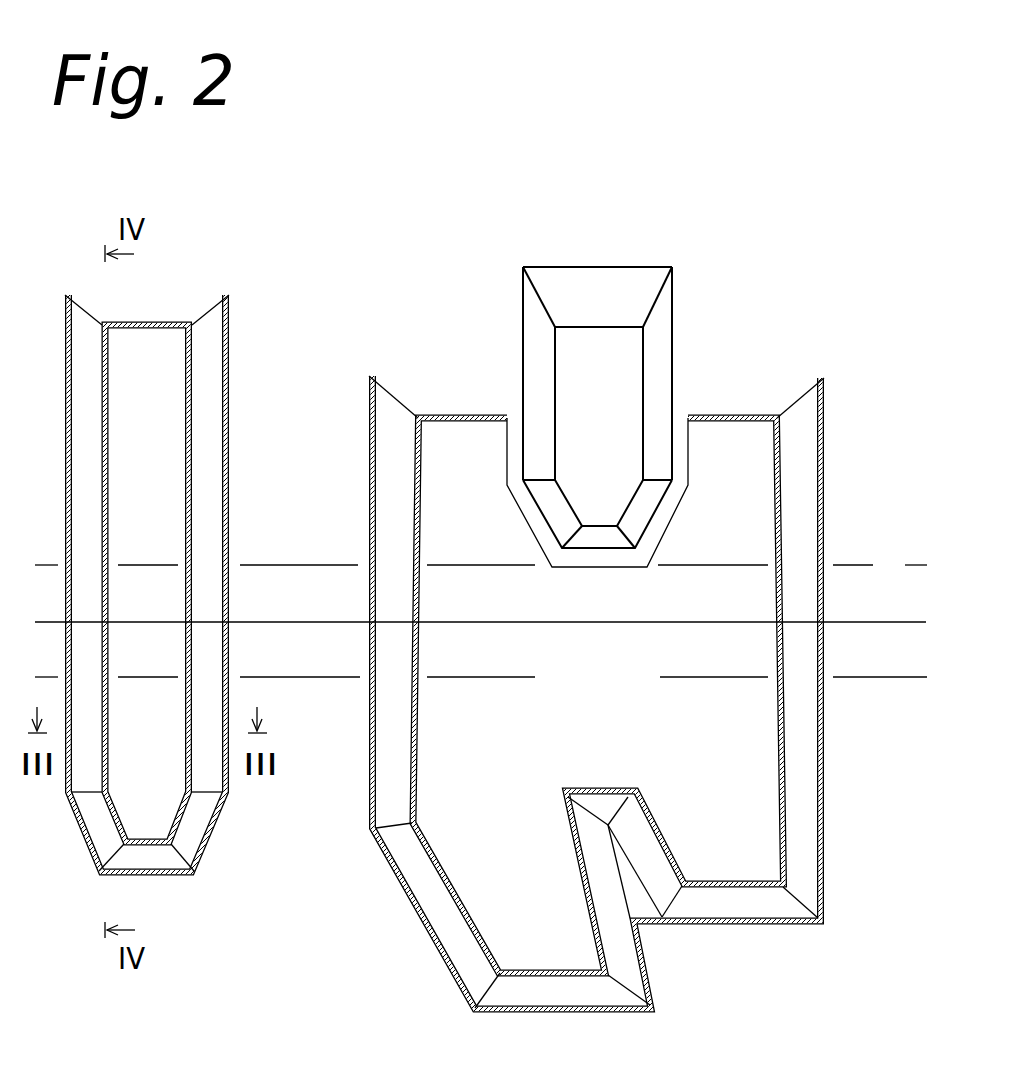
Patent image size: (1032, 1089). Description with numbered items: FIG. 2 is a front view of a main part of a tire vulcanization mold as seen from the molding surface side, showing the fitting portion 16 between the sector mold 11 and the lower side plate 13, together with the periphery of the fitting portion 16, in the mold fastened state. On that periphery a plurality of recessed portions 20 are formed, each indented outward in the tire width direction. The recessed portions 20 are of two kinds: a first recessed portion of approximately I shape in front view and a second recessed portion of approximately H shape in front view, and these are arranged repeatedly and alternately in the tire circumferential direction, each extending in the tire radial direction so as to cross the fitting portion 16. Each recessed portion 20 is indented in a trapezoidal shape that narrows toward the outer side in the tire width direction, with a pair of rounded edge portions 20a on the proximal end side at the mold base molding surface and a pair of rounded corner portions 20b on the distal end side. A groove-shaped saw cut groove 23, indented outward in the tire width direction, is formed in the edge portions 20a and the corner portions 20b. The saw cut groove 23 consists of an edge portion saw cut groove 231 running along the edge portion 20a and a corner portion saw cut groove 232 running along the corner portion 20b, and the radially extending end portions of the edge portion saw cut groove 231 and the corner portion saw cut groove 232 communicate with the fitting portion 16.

The sector mold 11 is at (523, 199).
The lower side plate 13 is at (427, 1068).
The fitting portion 16 is at (866, 621).
The recessed portion 20 is at (479, 601).
The edge portion 20a is at (212, 834).
The corner portion 20b is at (177, 817).
The saw cut groove 23 is at (445, 629).
The edge portion saw cut groove 231 is at (230, 485).
The corner portion saw cut groove 232 is at (193, 538).